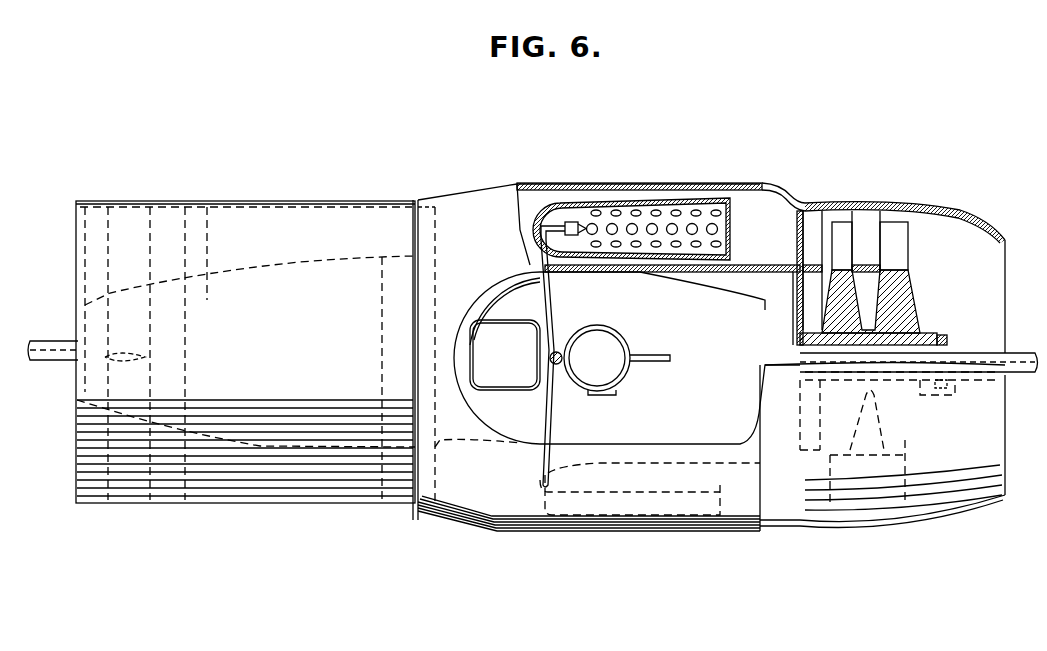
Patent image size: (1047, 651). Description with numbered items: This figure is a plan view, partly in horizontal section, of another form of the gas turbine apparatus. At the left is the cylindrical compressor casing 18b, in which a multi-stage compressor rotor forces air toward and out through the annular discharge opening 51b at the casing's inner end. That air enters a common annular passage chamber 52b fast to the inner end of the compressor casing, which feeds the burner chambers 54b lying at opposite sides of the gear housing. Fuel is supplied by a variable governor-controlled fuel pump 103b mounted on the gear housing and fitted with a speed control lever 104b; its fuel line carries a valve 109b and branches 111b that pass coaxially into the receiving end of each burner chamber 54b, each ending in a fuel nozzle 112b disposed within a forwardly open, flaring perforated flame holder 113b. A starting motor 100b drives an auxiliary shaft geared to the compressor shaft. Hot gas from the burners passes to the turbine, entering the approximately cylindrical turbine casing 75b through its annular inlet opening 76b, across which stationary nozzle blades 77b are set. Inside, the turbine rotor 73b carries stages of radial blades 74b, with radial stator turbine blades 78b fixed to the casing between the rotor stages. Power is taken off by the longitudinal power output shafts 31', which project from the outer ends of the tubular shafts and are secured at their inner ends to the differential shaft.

The compressor casing 18b is at (235, 201).
The power output shafts 31' is at (532, 344).
The annular discharge opening 51b is at (418, 216).
The annular passage chamber 52b is at (452, 213).
The burner chambers 54b is at (772, 207).
The turbine rotor 73b is at (912, 315).
The radial blades 74b is at (908, 234).
The turbine casing 75b is at (975, 222).
The annular inlet opening 76b is at (798, 202).
The stationary nozzle blades 77b is at (815, 222).
The radial stator turbine blades 78b is at (870, 220).
The starting motor 100b is at (495, 328).
The fuel pump 103b is at (610, 345).
The speed control lever 104b is at (606, 393).
The valve 109b is at (557, 350).
The branches 111b is at (541, 229).
The fuel nozzle 112b is at (572, 222).
The perforated flame holder 113b is at (682, 202).